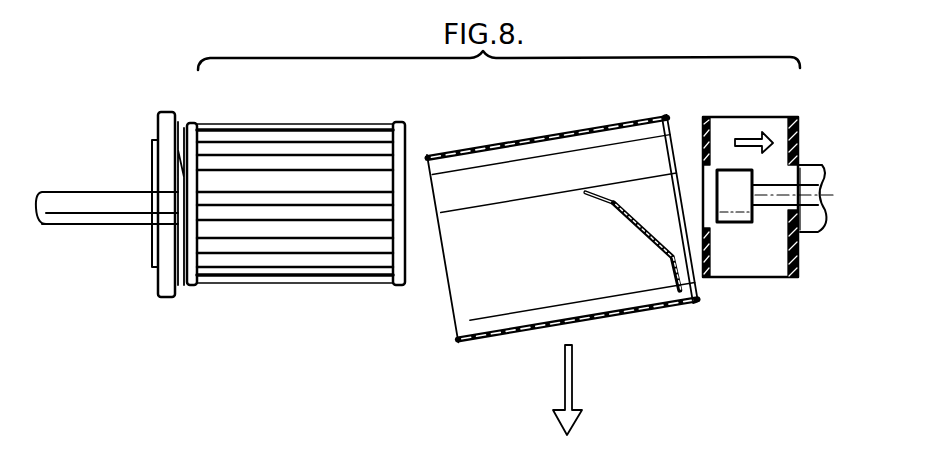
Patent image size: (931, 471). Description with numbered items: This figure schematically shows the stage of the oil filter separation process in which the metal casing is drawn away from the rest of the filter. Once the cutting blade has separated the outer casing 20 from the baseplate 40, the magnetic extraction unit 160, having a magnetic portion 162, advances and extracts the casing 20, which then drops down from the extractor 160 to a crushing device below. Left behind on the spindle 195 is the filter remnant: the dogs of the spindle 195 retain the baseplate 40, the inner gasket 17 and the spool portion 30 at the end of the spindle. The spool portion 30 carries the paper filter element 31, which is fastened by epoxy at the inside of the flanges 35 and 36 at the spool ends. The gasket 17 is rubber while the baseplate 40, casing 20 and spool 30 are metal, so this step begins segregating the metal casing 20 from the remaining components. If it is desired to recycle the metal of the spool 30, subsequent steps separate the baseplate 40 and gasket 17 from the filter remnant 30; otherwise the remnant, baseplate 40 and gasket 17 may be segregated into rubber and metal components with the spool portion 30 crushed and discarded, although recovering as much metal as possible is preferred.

The spindle 195 is at (104, 202).
The baseplate 40 is at (160, 116).
The inner gasket 17 is at (182, 124).
The filter element 30 is at (294, 219).
The filter element 31 is at (338, 132).
The flange 35 is at (189, 284).
The flange 36 is at (398, 287).
The outer casing 20 is at (562, 213).
The magnetic extraction unit 160 is at (769, 210).
The magnetic portion 162 is at (740, 224).